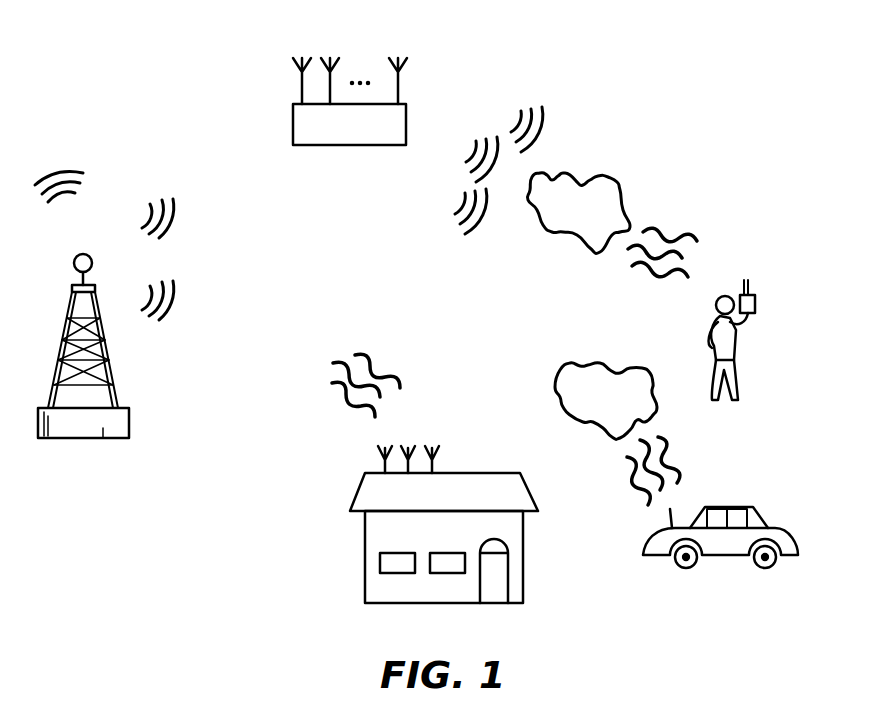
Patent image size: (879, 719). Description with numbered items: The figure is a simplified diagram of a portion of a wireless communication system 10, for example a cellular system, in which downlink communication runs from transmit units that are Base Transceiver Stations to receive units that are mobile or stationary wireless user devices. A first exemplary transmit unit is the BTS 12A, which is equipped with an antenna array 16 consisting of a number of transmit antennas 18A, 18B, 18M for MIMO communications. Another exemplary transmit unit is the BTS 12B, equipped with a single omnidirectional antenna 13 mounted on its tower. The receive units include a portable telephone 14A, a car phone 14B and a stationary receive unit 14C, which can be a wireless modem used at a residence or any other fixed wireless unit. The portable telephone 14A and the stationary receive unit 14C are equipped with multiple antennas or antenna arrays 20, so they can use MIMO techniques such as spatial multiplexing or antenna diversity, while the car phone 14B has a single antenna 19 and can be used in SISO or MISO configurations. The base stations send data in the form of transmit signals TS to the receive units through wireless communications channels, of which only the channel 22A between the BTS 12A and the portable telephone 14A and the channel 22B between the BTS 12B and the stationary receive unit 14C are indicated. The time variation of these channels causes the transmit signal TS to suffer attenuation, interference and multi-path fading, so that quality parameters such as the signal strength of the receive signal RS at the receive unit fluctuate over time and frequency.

The wireless communication system 10 is at (730, 79).
The Base Transceiver Station 12A is at (293, 124).
The Base Transceiver Station 12B is at (130, 413).
The omnidirectional antenna 13 is at (74, 261).
The portable telephone 14A is at (756, 301).
The car phone 14B is at (777, 529).
The stationary receive unit 14C is at (467, 473).
The antenna array 16 is at (229, 68).
The transmit antenna 18A is at (300, 85).
The transmit antenna 18B is at (333, 82).
The transmit antenna 18M is at (402, 83).
The single antenna 19 is at (668, 524).
The multiple antennas or antenna arrays 20 is at (771, 274).
The wireless communications channel 22A is at (550, 237).
The wireless communications channel 22B is at (555, 372).
The transmit signal TS is at (556, 110).
The receive signal RS is at (688, 212).